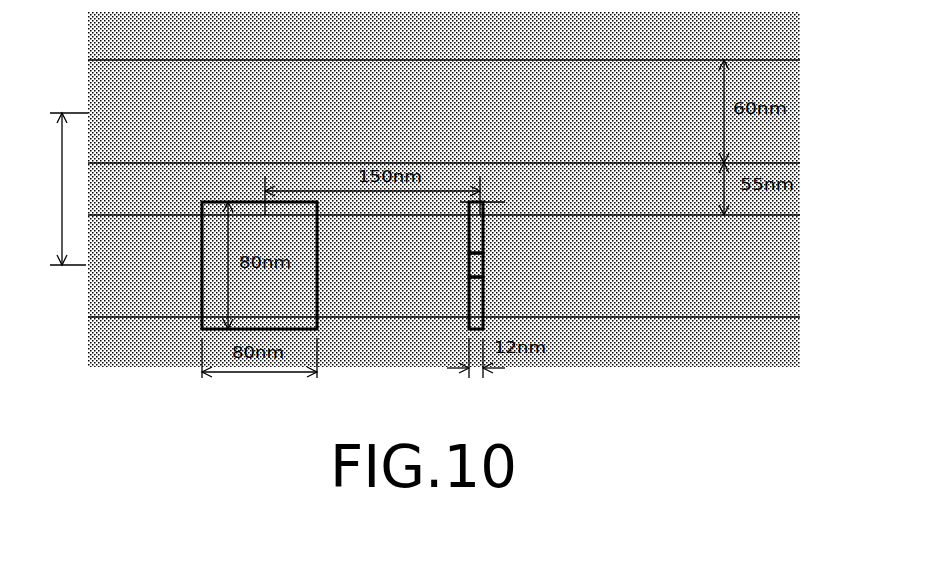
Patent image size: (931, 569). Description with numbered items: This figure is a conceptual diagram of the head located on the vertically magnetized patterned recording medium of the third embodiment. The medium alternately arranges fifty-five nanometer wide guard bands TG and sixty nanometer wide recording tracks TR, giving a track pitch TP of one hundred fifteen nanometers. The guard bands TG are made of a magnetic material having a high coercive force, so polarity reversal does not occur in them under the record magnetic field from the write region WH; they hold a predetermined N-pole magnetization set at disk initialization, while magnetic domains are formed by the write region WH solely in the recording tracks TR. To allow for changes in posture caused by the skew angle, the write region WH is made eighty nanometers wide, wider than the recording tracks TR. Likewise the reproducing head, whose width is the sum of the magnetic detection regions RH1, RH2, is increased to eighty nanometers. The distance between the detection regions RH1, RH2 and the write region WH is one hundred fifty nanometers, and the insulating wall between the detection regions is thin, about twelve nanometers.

The guard band TG is at (811, 12).
The recording track TR is at (811, 60).
The write region WH is at (305, 290).
The magnetic detection region RH1 is at (476, 240).
The magnetic detection region RH2 is at (476, 303).
The track pitch TP is at (79, 189).